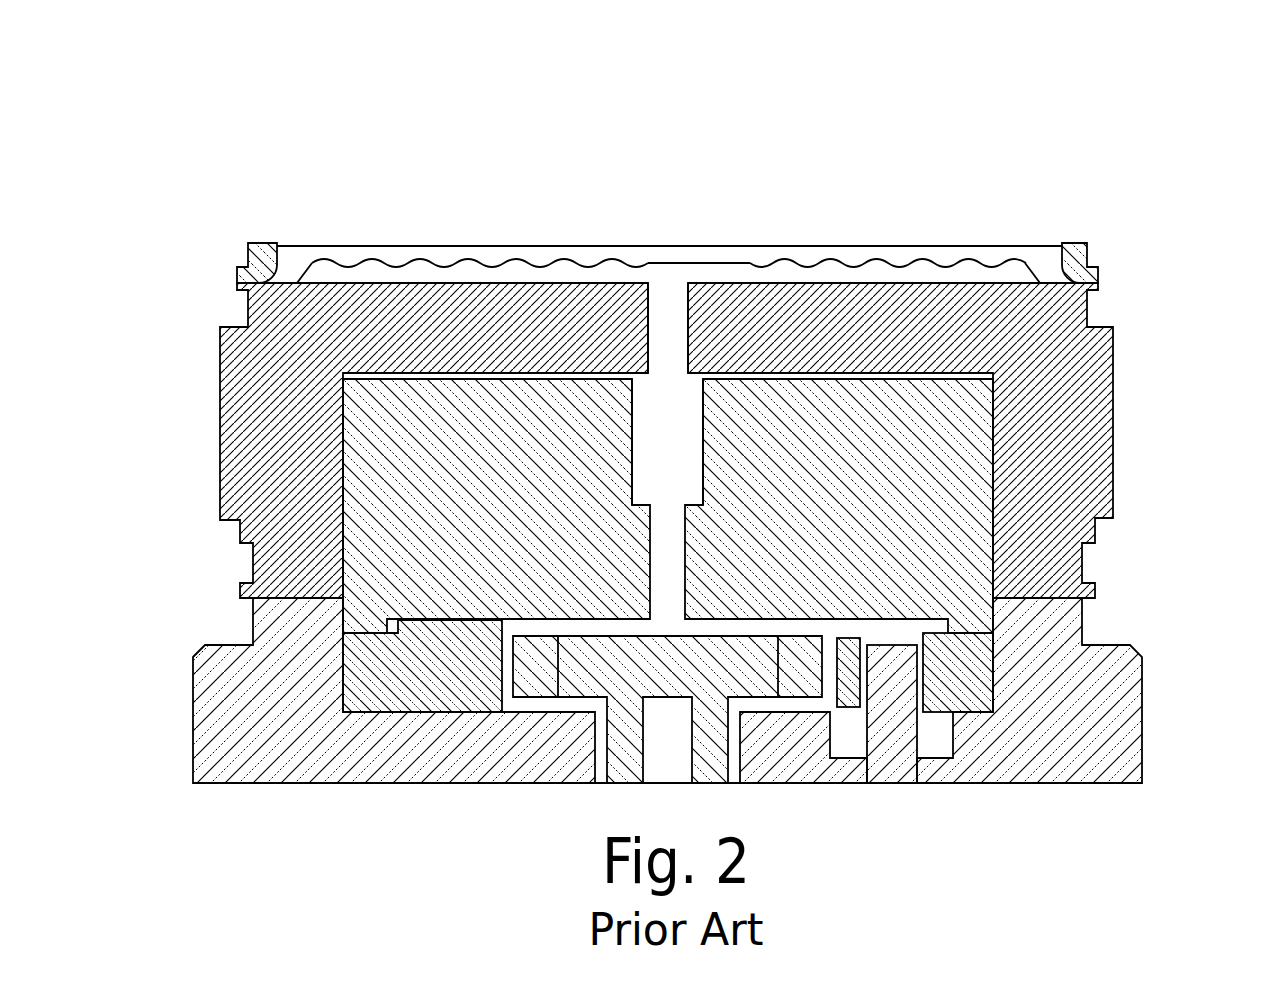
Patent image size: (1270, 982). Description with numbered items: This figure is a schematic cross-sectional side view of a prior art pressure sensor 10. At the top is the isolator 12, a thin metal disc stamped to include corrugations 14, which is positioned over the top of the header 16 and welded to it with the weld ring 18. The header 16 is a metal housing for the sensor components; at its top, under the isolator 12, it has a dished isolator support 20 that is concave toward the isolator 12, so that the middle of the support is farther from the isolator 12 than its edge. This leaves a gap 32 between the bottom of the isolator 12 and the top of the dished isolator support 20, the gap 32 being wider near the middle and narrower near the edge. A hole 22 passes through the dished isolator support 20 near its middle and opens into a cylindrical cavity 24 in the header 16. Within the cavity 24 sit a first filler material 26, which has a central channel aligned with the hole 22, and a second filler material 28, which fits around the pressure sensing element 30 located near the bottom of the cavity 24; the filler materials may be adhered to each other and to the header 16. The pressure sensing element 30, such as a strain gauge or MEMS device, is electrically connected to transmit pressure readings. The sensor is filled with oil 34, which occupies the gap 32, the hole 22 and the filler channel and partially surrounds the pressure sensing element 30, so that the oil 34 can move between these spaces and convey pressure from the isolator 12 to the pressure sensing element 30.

The pressure sensor 10 is at (250, 130).
The isolator 12 is at (512, 252).
The corrugations 14 is at (447, 256).
The header 16 is at (235, 352).
The weld ring 18 is at (258, 250).
The dished isolator support 20 is at (885, 284).
The hole 22 is at (665, 310).
The cavity 24 is at (343, 450).
The first filler material 26 is at (395, 497).
The second filler material 28 is at (405, 670).
The pressure sensing element 30 is at (675, 660).
The gap 32 is at (755, 275).
The oil 34 is at (675, 470).